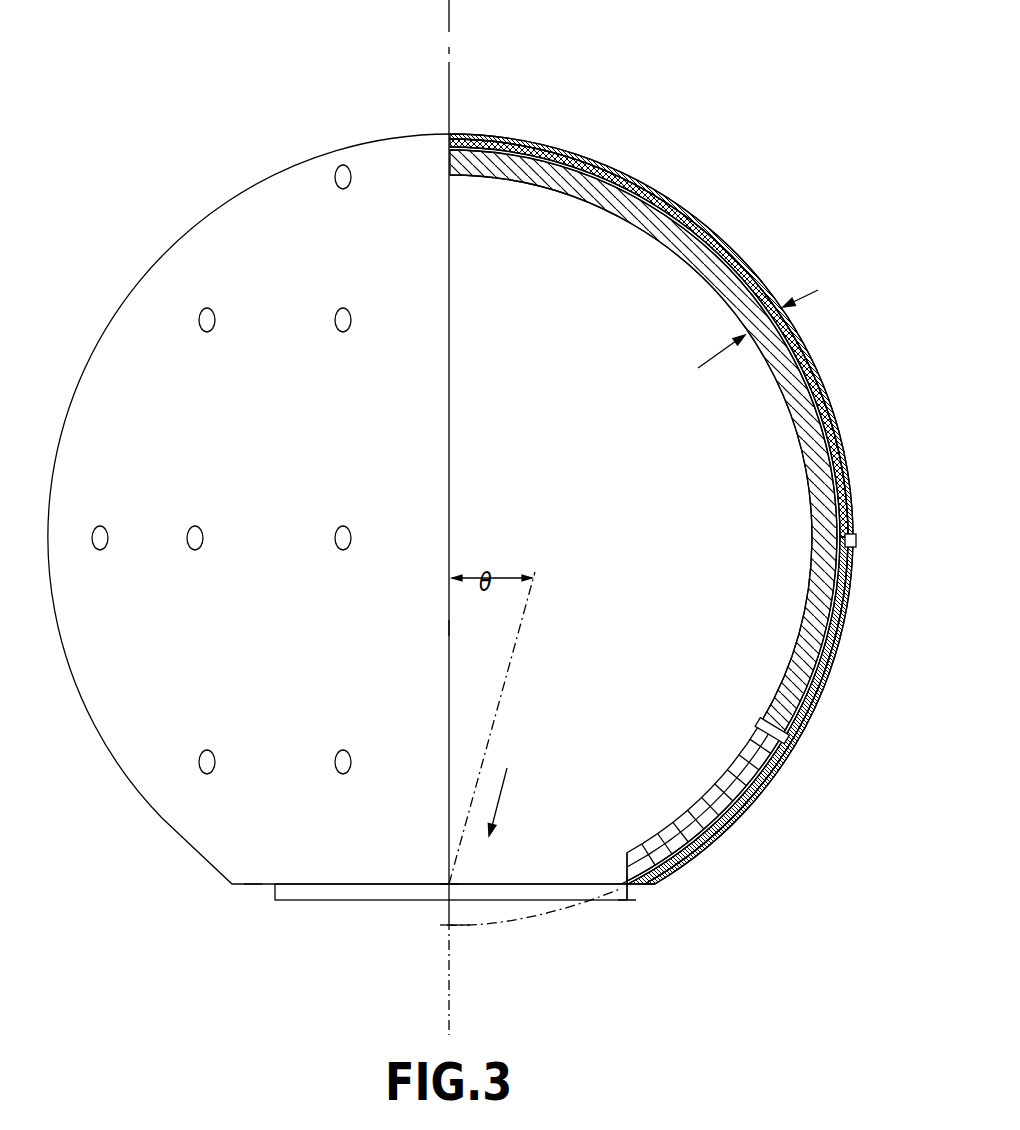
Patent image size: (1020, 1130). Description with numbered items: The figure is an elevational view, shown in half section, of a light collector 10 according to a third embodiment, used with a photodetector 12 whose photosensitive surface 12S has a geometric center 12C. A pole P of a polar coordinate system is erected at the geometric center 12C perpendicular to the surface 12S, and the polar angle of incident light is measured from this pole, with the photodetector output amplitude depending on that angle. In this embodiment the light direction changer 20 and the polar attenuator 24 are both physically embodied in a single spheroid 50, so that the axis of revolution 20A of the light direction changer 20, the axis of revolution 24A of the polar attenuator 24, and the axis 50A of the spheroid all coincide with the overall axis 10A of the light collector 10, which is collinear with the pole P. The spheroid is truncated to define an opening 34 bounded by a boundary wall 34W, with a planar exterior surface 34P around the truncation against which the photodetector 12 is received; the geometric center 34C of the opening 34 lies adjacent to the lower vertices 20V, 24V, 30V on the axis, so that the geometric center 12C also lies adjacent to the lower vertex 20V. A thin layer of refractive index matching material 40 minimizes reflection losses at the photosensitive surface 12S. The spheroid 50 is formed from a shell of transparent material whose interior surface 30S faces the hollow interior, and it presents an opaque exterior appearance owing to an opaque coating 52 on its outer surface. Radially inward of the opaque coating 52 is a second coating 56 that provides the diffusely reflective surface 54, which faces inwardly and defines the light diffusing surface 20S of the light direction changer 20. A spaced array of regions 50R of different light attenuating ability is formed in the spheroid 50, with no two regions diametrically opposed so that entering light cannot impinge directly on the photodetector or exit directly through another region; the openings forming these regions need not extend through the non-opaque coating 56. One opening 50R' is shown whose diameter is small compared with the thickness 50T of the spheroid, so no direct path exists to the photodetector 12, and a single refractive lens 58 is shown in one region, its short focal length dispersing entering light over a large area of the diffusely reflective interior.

The light collector 10 is at (243, 115).
The overall axis of the light collector 10A is at (531, 517).
The axis of revolution of the light direction changer 20A is at (531, 517).
The axis of revolution of the polar attenuator 24A is at (531, 517).
The shell assembly axis 50A is at (449, 38).
The photodetector 12 is at (320, 902).
The geometric center 12C is at (343, 933).
The photosensitive surface 12S is at (300, 884).
The light direction changer 20 is at (687, 226).
The light diffusing surface 20S is at (707, 280).
The polar attenuator 24 is at (788, 186).
The interior surface of the shell 30S is at (743, 752).
The opening 34 is at (514, 745).
The geometric center of the opening 34C is at (450, 885).
The planar surface 34P is at (253, 886).
The boundary wall 34W is at (627, 868).
The layer of refractive index matching material 40 is at (629, 892).
The spheroid 50 is at (667, 509).
The regions of different light attenuating ability 50R is at (221, 469).
The appropriately sized opening 50R' is at (817, 738).
The thickness of the spheroid 50T is at (779, 317).
The opaque coating 52 is at (817, 373).
The diffusely reflective surface 54 is at (624, 218).
The second coating 56 is at (833, 415).
The refractive lens 58 is at (857, 540).
The lower vertex of the light direction changer 20V is at (343, 933).
The lower vertex of the polar attenuator 24V is at (343, 933).
The lower vertex of the spheroid 30V is at (449, 886).
The pole P is at (449, 627).